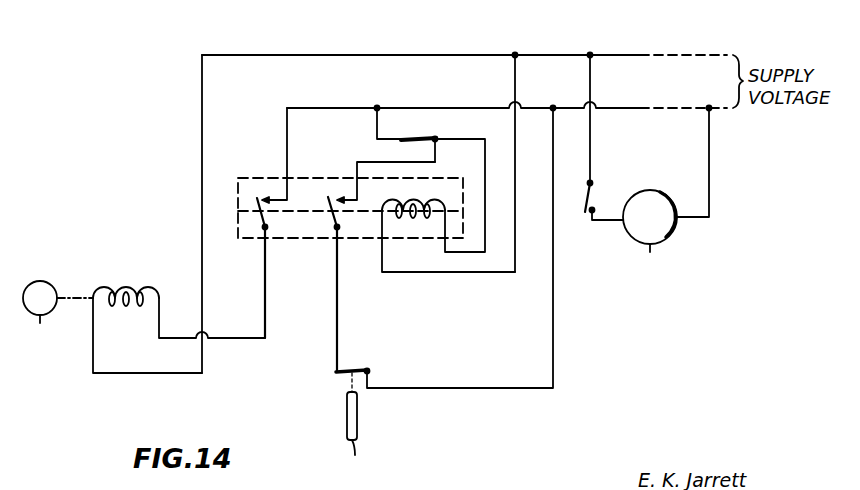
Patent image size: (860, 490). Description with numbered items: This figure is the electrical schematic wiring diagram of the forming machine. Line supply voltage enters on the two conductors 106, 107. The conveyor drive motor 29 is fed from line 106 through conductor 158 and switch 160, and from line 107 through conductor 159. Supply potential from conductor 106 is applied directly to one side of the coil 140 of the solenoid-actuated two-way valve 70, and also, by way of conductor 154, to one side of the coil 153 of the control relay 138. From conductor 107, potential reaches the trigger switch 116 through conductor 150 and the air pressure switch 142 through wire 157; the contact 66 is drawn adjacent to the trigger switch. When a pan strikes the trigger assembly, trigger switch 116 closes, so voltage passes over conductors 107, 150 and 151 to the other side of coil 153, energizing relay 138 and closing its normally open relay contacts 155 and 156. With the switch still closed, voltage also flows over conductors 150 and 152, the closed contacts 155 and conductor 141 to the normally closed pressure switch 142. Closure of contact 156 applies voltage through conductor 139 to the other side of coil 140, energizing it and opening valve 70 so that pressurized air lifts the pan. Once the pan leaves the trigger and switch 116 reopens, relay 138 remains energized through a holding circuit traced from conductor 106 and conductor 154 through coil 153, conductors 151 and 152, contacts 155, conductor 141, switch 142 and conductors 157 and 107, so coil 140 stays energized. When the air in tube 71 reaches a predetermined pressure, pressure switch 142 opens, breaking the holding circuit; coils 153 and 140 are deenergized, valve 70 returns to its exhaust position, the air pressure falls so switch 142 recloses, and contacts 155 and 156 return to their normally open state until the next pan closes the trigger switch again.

The conveyor drive motor 29 is at (650, 190).
The contact 66 is at (437, 148).
The two-way valve 70 is at (40, 282).
The tube 71 is at (360, 417).
The conductor 106 is at (682, 55).
The conductor 107 is at (638, 108).
The trigger switch 116 is at (416, 137).
The control relay 138 is at (453, 230).
The conductor 139 is at (233, 340).
The coil 140 is at (125, 290).
The conductor 141 is at (335, 343).
The air pressure switch 142 is at (354, 368).
The conductor 150 is at (377, 127).
The conductor 151 is at (496, 148).
The conductor 152 is at (397, 161).
The coil 153 is at (395, 227).
The conductor 154 is at (382, 260).
The relay contacts 155 is at (326, 217).
The relay contacts 156 is at (262, 193).
The wire 157 is at (552, 298).
The conductor 158 is at (592, 130).
The conductor 159 is at (709, 162).
The switch 160 is at (585, 198).